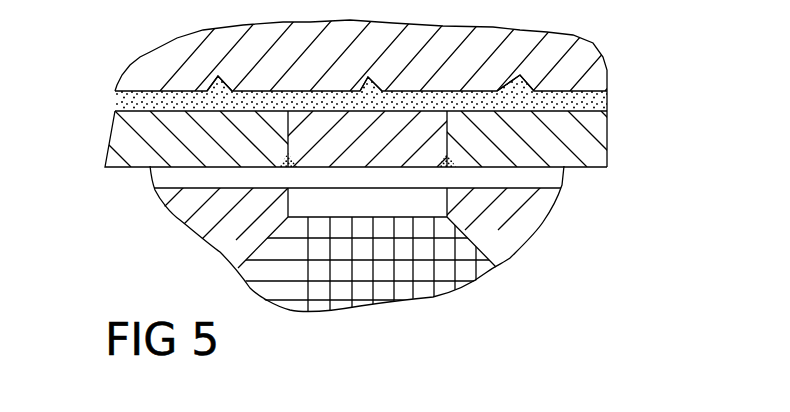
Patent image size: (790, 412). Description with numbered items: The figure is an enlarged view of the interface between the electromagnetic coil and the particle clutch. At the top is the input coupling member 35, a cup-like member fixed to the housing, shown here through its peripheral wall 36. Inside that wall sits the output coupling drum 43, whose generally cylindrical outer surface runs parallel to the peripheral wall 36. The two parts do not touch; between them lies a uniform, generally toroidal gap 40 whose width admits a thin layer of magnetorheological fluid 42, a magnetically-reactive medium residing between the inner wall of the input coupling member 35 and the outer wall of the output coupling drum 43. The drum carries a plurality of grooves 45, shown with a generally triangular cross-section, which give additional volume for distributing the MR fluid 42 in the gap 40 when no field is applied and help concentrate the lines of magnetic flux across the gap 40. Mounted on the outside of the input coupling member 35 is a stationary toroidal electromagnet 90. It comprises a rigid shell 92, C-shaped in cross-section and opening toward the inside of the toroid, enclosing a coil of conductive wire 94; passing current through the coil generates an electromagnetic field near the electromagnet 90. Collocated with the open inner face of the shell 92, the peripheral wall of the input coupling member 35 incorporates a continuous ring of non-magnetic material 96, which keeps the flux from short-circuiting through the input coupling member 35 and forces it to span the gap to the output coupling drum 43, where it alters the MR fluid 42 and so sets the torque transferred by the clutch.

The input coupling member 35 is at (131, 86).
The peripheral wall 36 is at (129, 136).
The gap 40 is at (587, 80).
The magnetorheological fluid 42 is at (607, 100).
The output coupling drum 43 is at (553, 91).
The grooves 45 is at (522, 84).
The electromagnet 90 is at (580, 262).
The shell 92 is at (533, 205).
The coil conductive wire 94 is at (273, 270).
The ring of non-magnetic material 96 is at (307, 139).